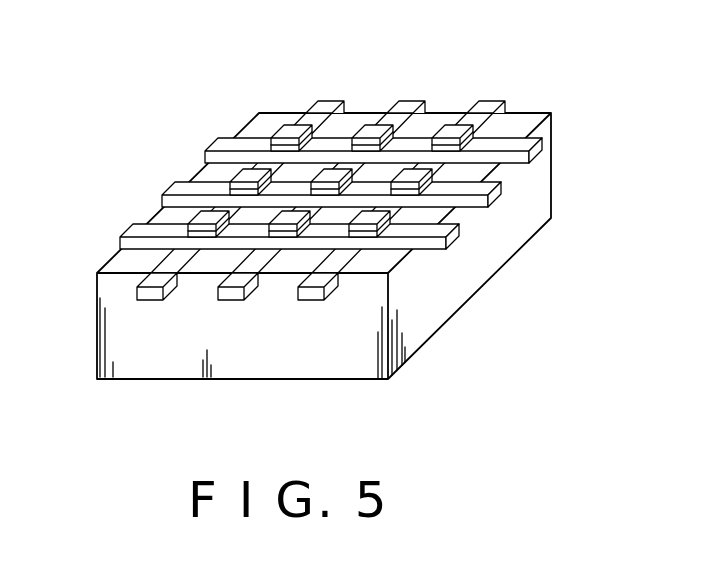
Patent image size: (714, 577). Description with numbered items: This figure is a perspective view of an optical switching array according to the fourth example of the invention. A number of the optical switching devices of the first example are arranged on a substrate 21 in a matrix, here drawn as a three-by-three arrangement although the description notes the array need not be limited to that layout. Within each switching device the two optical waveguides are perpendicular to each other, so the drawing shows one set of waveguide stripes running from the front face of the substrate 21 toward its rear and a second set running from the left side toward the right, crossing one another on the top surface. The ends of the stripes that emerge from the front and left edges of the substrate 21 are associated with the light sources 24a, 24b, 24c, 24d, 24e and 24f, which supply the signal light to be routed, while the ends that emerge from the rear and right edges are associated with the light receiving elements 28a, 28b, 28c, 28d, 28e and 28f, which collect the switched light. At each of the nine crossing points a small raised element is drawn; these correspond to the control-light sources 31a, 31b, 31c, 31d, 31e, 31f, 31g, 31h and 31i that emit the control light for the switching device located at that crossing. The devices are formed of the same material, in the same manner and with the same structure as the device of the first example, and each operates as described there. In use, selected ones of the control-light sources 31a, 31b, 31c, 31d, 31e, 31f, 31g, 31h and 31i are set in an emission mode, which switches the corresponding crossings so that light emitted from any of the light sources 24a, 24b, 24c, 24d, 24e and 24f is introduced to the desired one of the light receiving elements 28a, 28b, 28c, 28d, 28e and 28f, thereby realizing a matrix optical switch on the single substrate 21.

The substrate 21 is at (144, 369).
The light source 24a is at (150, 300).
The light source 24b is at (231, 300).
The light source 24c is at (311, 300).
The light source 24d is at (122, 233).
The light source 24e is at (163, 192).
The light source 24f is at (204, 150).
The light receiving element 28a is at (460, 243).
The light receiving element 28b is at (500, 190).
The light receiving element 28c is at (541, 142).
The light receiving element 28d is at (334, 104).
The light receiving element 28e is at (412, 104).
The light receiving element 28f is at (491, 104).
The light source 31a is at (291, 134).
The light source 31b is at (240, 176).
The light source 31c is at (207, 209).
The light source 31d is at (373, 134).
The light source 31e is at (337, 173).
The light source 31f is at (280, 240).
The light source 31g is at (452, 134).
The light source 31h is at (414, 172).
The light source 31i is at (372, 213).